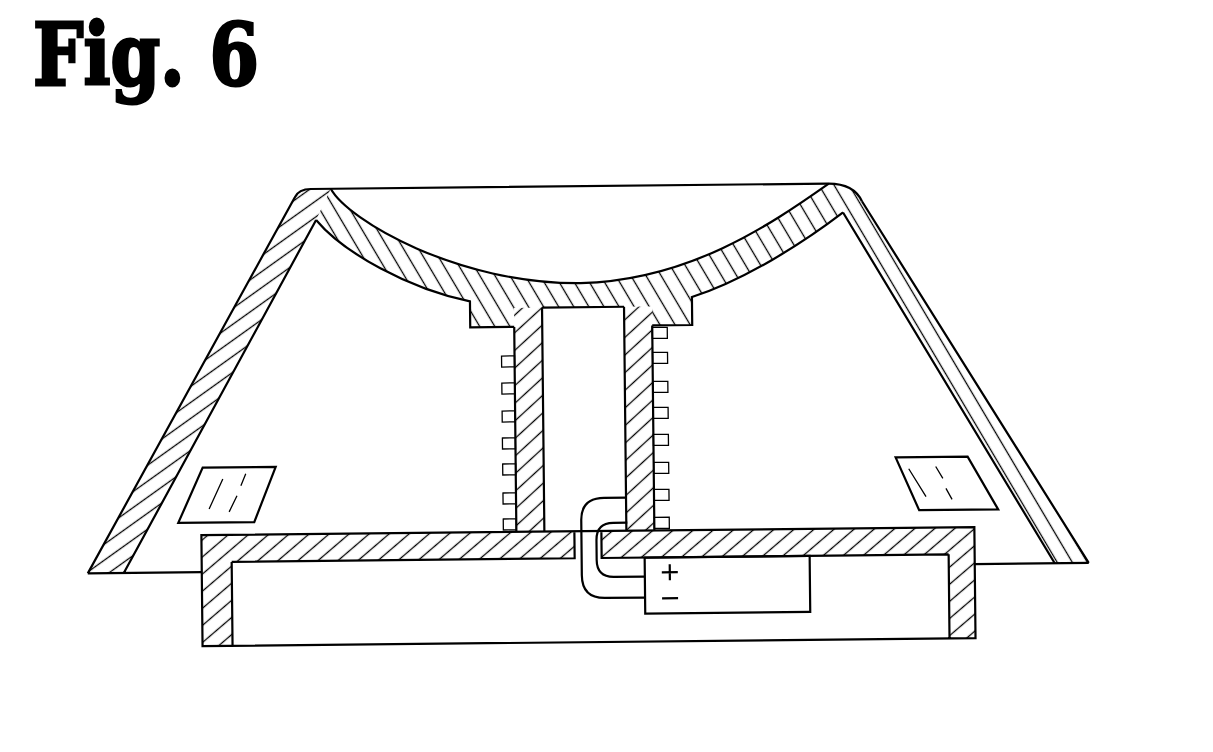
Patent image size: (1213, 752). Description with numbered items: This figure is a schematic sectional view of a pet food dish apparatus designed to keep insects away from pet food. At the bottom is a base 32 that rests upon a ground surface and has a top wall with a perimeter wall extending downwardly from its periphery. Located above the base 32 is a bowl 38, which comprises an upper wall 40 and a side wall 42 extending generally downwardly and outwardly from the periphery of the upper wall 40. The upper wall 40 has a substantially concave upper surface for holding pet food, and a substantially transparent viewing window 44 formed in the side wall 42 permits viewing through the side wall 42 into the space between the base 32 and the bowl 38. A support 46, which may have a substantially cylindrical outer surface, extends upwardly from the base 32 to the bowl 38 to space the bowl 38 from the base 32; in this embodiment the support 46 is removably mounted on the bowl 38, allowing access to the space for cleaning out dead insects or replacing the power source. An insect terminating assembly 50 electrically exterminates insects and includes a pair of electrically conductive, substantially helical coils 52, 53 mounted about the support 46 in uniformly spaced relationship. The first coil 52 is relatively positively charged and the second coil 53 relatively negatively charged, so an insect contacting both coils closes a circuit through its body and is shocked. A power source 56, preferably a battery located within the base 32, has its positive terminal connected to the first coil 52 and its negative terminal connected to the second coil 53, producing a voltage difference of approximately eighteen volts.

The base 32 is at (965, 590).
The bowl 38 is at (975, 372).
The upper wall 40 is at (722, 210).
The side wall 42 is at (922, 317).
The viewing window 44 is at (953, 490).
The support 46 is at (528, 342).
The insect terminating assembly 50 is at (478, 435).
The first coil 52 is at (670, 493).
The second coil 53 is at (668, 521).
The power source 56 is at (712, 590).